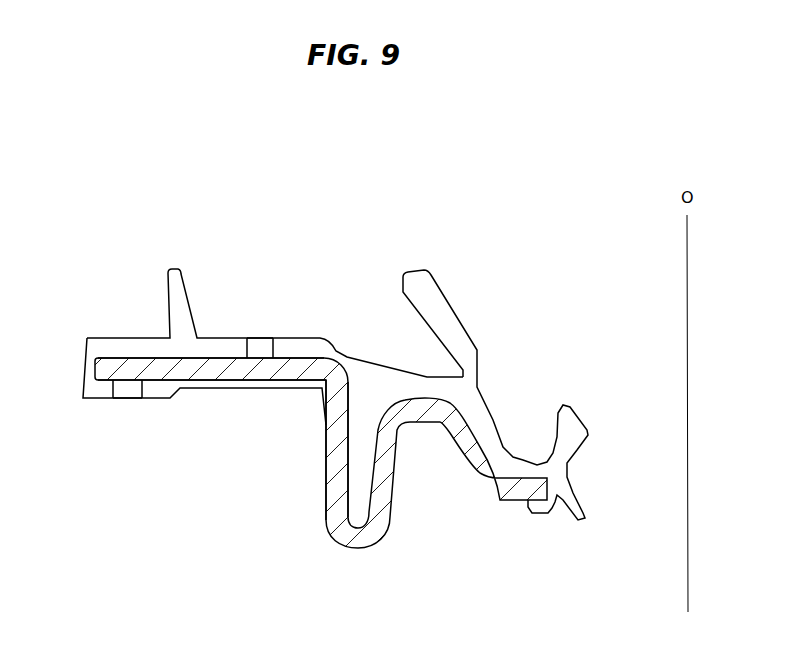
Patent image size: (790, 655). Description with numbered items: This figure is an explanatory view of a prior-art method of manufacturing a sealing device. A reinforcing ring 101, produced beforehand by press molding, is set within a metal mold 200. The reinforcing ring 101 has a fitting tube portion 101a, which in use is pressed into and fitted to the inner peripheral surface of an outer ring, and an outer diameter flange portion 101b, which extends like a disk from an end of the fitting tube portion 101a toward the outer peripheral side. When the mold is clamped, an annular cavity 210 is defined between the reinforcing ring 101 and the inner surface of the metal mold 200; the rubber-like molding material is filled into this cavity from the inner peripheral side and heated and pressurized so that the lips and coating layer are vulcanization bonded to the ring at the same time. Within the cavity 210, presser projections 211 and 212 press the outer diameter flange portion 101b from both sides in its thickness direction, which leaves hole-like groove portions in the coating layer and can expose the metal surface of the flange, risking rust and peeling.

The metal mold 200 is at (335, 394).
The annular cavity 210 is at (480, 388).
The presser projection 211 is at (262, 357).
The presser projection 212 is at (130, 387).
The reinforcing ring 101 is at (357, 431).
The fitting tube portion 101a is at (332, 460).
The outer diameter flange portion 101b is at (202, 364).